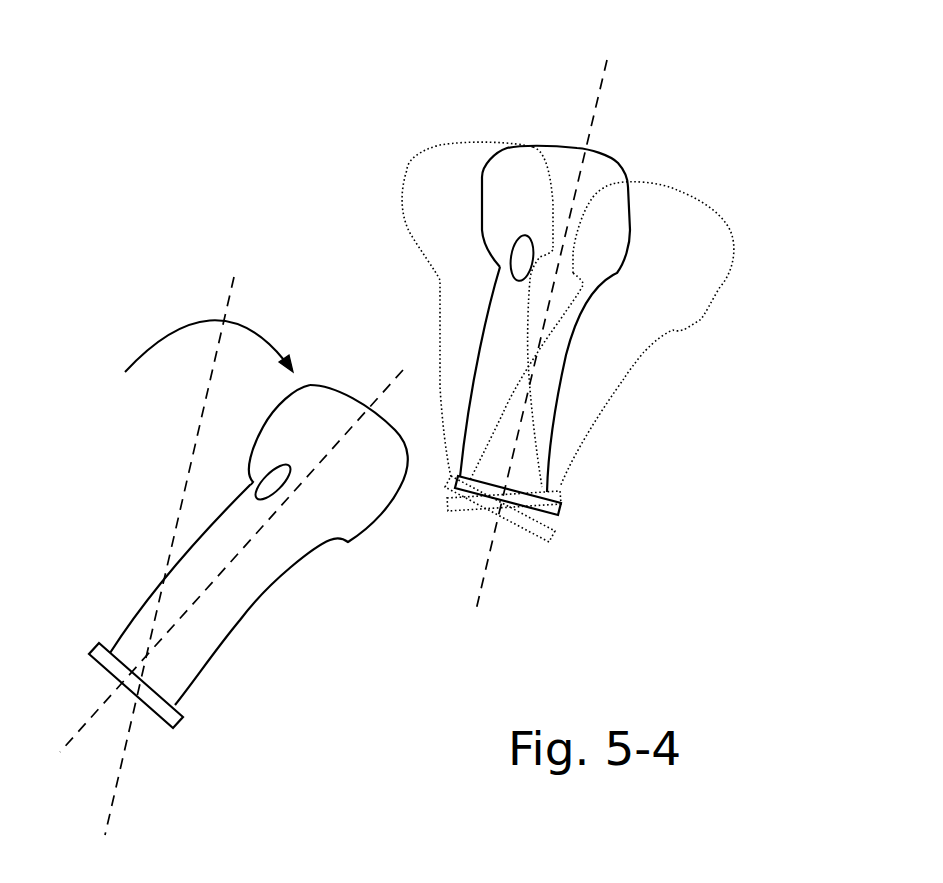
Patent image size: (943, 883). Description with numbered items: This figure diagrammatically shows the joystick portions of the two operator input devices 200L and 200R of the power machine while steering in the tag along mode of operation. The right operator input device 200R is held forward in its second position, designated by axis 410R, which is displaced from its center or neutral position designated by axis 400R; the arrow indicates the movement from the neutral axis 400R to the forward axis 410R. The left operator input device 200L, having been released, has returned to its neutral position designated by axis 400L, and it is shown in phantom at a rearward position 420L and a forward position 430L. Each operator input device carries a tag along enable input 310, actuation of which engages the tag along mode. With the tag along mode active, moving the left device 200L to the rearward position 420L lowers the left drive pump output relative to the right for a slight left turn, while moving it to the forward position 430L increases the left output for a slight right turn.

The operator input device 200L is at (623, 207).
The operator input device 200R is at (355, 497).
The tag along enable input 310 is at (270, 485).
The axis 400L is at (593, 107).
The axis 400R is at (235, 279).
The axis 410R is at (388, 389).
The rearward position 420L is at (437, 187).
The forward position 430L is at (703, 272).